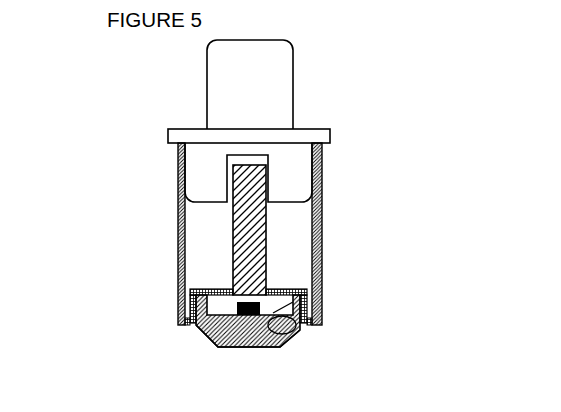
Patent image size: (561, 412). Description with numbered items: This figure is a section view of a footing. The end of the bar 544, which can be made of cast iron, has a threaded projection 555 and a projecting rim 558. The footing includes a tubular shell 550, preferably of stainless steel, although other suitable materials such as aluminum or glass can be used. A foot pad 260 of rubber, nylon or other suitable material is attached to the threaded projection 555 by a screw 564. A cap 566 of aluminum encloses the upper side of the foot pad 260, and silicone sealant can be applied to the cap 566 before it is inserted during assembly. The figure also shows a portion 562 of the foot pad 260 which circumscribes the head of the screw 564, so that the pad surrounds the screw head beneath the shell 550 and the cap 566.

The bar 544 is at (277, 103).
The projecting rim 558 is at (330, 132).
The tubular shell 550 is at (322, 273).
The threaded projection 555 is at (208, 185).
The screw 564 is at (268, 248).
The cap 566 is at (203, 287).
The portion of foot pad 562 is at (287, 339).
The foot pad 260 is at (277, 348).